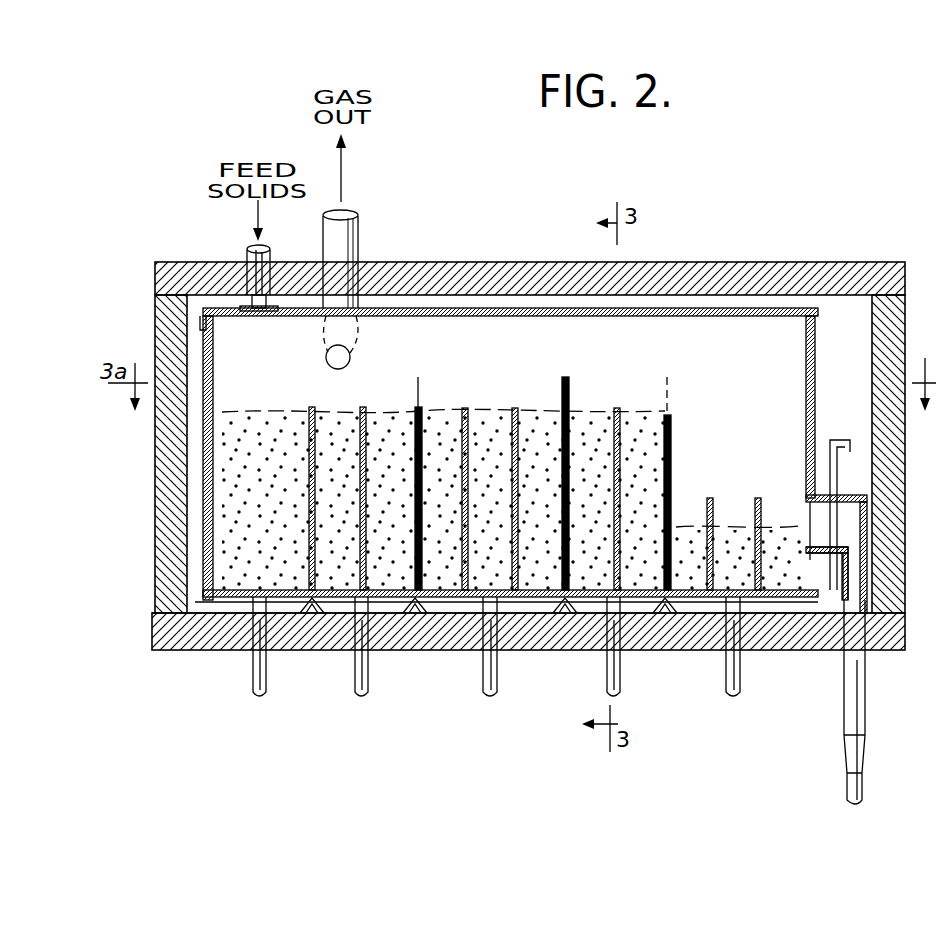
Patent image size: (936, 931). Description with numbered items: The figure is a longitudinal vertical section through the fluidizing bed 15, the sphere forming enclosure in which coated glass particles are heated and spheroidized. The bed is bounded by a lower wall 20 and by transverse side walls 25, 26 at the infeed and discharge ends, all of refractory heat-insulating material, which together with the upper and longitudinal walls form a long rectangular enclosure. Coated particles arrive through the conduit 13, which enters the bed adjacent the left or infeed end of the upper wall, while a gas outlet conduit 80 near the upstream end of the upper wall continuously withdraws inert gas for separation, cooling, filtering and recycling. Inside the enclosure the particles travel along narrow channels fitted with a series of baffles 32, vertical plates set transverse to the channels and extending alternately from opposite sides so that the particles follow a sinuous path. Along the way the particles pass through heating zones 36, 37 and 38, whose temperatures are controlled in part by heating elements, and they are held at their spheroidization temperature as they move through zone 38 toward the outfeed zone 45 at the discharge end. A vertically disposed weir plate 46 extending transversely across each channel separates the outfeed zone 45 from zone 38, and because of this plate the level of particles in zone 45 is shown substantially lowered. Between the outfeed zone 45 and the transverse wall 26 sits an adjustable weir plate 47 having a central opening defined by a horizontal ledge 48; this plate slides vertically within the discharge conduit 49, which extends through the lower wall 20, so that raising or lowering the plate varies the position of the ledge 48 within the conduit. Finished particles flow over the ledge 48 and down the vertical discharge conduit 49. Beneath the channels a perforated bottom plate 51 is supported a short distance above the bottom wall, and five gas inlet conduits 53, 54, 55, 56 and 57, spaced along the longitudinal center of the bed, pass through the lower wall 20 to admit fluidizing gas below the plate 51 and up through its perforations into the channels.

The conduit 13 is at (247, 256).
The fluidizing bed 15 is at (846, 256).
The lower wall 20 is at (423, 651).
The transverse side wall 25 is at (158, 473).
The transverse side wall 26 is at (900, 431).
The baffles 32 is at (467, 410).
The heating zone 36 is at (358, 387).
The heating zone 37 is at (485, 387).
The heating zone 38 is at (632, 387).
The outfeed zone 45 is at (730, 445).
The weir plate 46 is at (671, 428).
The adjustable weir plate 47 is at (832, 535).
The horizontal ledge 48 is at (829, 523).
The discharge conduit 49 is at (866, 795).
The perforated bottom plate 51 is at (228, 598).
The gas inlet conduit 53 is at (253, 684).
The gas inlet conduit 54 is at (356, 686).
The gas inlet conduit 55 is at (484, 690).
The gas inlet conduit 56 is at (606, 688).
The gas inlet conduit 57 is at (726, 690).
The gas outlet conduit 80 is at (358, 222).